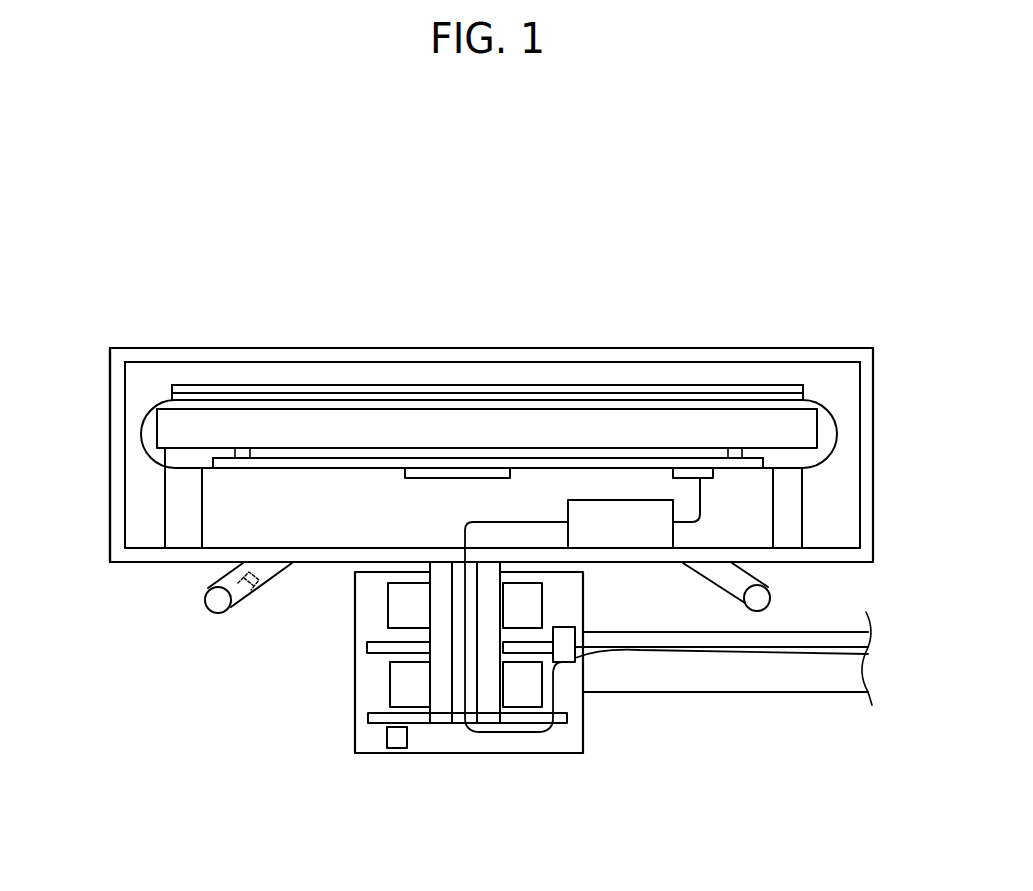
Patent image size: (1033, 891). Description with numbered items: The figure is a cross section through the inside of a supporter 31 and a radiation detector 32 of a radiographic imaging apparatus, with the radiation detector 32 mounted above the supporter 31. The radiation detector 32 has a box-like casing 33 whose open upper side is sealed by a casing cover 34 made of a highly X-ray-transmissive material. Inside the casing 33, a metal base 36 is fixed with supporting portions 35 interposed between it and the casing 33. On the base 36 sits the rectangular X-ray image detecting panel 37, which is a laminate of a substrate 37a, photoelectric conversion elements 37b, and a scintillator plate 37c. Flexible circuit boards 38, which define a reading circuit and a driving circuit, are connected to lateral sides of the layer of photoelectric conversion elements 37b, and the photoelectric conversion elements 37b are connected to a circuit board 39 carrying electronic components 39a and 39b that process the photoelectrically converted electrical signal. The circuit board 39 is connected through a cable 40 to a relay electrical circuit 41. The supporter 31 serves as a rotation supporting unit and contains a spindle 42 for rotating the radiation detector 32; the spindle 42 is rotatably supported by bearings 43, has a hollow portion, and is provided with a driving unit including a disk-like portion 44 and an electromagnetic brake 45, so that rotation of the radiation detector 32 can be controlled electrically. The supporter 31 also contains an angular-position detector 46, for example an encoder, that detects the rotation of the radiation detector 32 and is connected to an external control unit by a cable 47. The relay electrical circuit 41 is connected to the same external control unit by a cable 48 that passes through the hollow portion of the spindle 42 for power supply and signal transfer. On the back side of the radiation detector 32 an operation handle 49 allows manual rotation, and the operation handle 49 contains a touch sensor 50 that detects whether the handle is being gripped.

The supporter 31 is at (547, 773).
The radiation detector 32 is at (826, 312).
The casing 33 is at (115, 400).
The casing cover 34 is at (127, 357).
The supporting portions 35 is at (180, 515).
The base 36 is at (803, 432).
The X-ray image detecting panel 37 is at (214, 378).
The substrate 37a is at (433, 405).
The photoelectric conversion elements 37b is at (375, 400).
The scintillator plate 37c is at (263, 390).
The flexible circuit boards 38 is at (140, 452).
The circuit board 39 is at (555, 465).
The electronic component 39a is at (438, 480).
The electronic component 39b is at (690, 473).
The cable 40 is at (697, 500).
The relay electrical circuit 41 is at (630, 540).
The spindle 42 is at (440, 723).
The bearings 43 is at (398, 600).
The disk-like portion 44 is at (372, 718).
The electromagnetic brake 45 is at (397, 748).
The angular-position detector 46 is at (576, 664).
The cable 47 is at (683, 692).
The cable 48 is at (805, 655).
The operation handle 49 is at (215, 613).
The touch sensor 50 is at (236, 572).